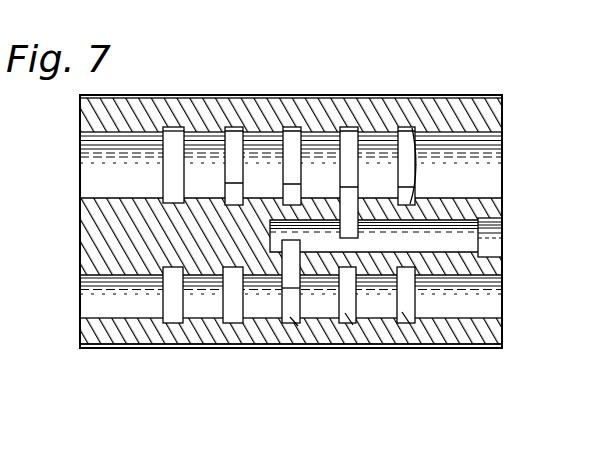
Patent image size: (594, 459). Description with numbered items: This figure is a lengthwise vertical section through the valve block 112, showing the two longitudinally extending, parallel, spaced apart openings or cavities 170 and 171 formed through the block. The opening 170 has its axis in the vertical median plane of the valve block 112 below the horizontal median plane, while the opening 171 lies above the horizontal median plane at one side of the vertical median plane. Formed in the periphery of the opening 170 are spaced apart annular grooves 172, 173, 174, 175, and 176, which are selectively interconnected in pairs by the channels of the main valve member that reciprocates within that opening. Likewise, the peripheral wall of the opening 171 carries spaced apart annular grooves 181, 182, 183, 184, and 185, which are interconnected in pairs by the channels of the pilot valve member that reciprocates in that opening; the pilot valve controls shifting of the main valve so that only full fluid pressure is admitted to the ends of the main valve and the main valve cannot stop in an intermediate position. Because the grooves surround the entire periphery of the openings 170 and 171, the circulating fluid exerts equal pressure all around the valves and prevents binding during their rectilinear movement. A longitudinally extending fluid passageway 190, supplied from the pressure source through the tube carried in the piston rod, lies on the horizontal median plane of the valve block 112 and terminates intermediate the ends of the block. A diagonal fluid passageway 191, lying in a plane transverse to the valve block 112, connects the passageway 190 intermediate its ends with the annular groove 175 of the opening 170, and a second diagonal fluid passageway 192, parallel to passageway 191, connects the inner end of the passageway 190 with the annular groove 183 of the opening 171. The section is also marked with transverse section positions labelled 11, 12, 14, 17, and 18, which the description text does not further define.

The section line position 11 is at (402, 382).
The section line position 12 is at (170, 382).
The section line position 14 is at (230, 382).
The section line position 17 is at (288, 382).
The section line position 18 is at (347, 382).
The valve block 112 is at (490, 335).
The opening 170 is at (490, 153).
The opening 171 is at (492, 305).
The annular groove 172 is at (172, 130).
The annular groove 173 is at (228, 130).
The annular groove 174 is at (285, 129).
The annular groove 175 is at (342, 130).
The annular groove 176 is at (400, 128).
The annular groove 181 is at (170, 310).
The annular groove 182 is at (237, 320).
The annular groove 183 is at (308, 349).
The annular groove 184 is at (401, 352).
The annular groove 185 is at (439, 346).
The fluid passageway 190 is at (412, 129).
The diagonal fluid passageway 191 is at (351, 231).
The diagonal fluid passageway 192 is at (288, 262).